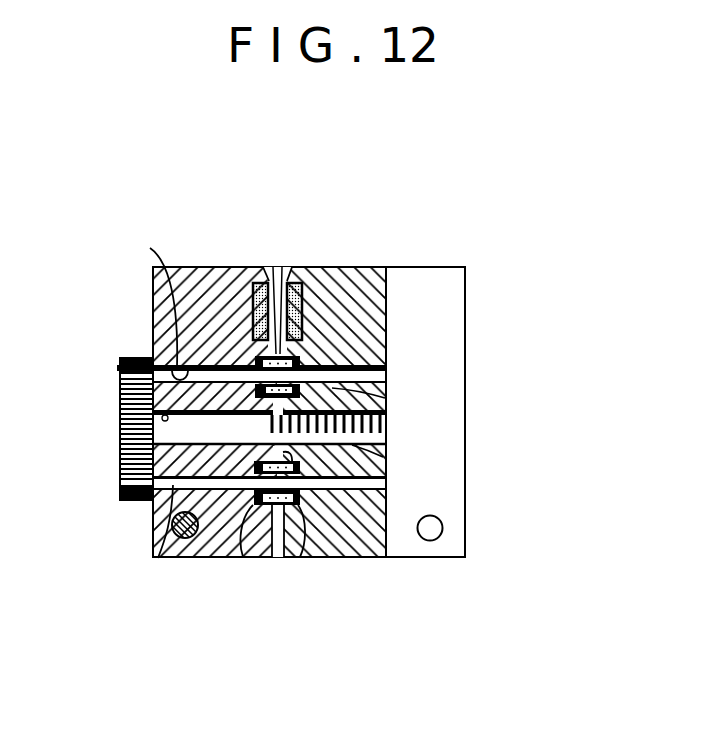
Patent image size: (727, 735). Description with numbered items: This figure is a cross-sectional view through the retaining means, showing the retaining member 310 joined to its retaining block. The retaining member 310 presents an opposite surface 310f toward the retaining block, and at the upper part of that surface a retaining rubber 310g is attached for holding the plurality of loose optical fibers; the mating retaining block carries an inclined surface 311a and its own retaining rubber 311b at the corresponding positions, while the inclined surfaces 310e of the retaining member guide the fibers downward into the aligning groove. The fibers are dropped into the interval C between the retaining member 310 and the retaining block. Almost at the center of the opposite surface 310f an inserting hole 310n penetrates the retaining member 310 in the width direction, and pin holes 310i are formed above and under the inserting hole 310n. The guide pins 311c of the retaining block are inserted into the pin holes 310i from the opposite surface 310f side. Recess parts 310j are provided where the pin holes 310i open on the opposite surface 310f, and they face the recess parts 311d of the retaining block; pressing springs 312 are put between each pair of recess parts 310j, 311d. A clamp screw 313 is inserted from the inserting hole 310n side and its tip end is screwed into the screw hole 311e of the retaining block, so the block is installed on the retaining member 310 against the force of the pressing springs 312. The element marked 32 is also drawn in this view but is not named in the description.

The retaining member 310 is at (187, 262).
The pin holes 310i is at (140, 576).
The retaining rubber 310g is at (256, 268).
The inclined surfaces 310e is at (273, 266).
The interval C is at (282, 267).
The inclined surface 311a is at (296, 282).
The retaining rubber 311b is at (335, 268).
The pressing springs 312 is at (300, 366).
The guide pins 311c is at (380, 378).
The recess parts 311d is at (385, 398).
The screw hole 311e is at (380, 438).
The bolt hole 32 is at (431, 533).
The clamp screw 313 is at (122, 428).
The inserting hole 310n is at (155, 362).
The recess parts 310j is at (243, 560).
The opposite surface 310f is at (274, 559).